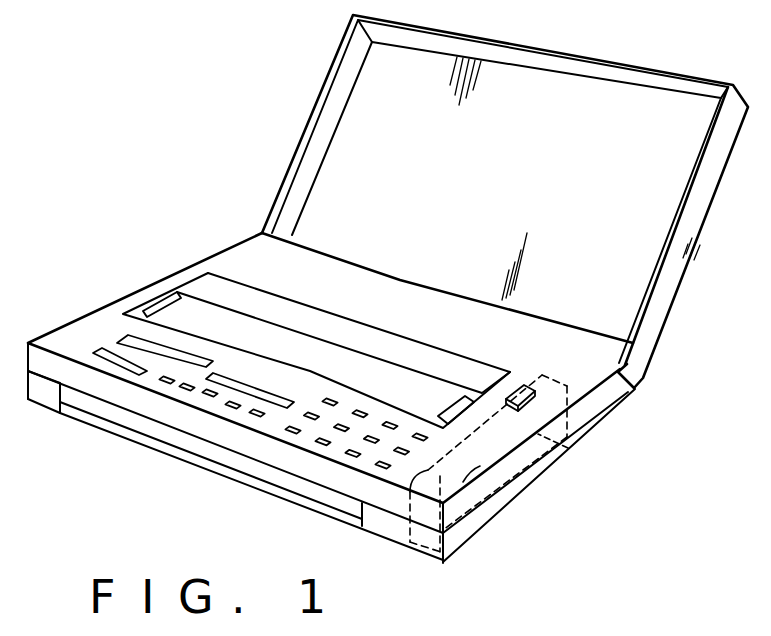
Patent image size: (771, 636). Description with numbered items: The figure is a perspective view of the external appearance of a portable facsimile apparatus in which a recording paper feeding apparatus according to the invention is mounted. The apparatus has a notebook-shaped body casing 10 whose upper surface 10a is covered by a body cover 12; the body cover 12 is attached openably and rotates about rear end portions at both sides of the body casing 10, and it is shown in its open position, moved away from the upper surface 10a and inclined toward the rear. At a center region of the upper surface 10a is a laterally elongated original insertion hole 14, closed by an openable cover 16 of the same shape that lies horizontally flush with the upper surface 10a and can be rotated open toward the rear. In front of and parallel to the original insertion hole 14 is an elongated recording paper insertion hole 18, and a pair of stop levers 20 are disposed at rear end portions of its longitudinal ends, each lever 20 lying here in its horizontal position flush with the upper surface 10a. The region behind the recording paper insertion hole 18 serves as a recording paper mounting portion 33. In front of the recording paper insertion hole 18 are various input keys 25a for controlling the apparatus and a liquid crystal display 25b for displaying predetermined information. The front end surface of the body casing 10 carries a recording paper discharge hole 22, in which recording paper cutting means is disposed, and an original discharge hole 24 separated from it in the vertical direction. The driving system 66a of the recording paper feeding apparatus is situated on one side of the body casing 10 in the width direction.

The body casing 10 is at (596, 421).
The upper surface 10a is at (496, 438).
The body cover 12 is at (677, 301).
The original insertion hole 14 is at (491, 385).
The openable cover 16 is at (335, 323).
The recording paper insertion hole 18 is at (263, 360).
The stop levers 20 is at (150, 298).
The recording paper discharge hole 22 is at (364, 508).
The original discharge hole 24 is at (365, 532).
The input keys 25a is at (463, 482).
The liquid crystal display 25b is at (240, 383).
The recording paper mounting portion 33 is at (373, 378).
The driving system 66a is at (568, 448).